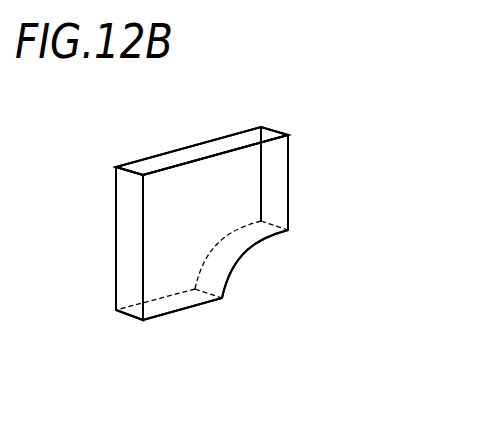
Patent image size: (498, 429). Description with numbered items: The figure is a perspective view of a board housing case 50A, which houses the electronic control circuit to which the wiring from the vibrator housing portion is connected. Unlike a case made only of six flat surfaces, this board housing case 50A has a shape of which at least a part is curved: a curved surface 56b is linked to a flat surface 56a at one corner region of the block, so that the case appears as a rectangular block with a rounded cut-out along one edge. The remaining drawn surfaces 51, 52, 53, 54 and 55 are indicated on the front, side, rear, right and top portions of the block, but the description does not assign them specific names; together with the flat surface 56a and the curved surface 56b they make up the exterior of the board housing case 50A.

The board housing case 50A is at (289, 97).
The first surface 51 is at (168, 277).
The side surface 52 is at (125, 257).
The second surface 53 is at (178, 203).
The side surface 54 is at (275, 195).
The top surface 55 is at (203, 152).
The flat surface 56a is at (187, 300).
The curved surface 56b is at (240, 243).